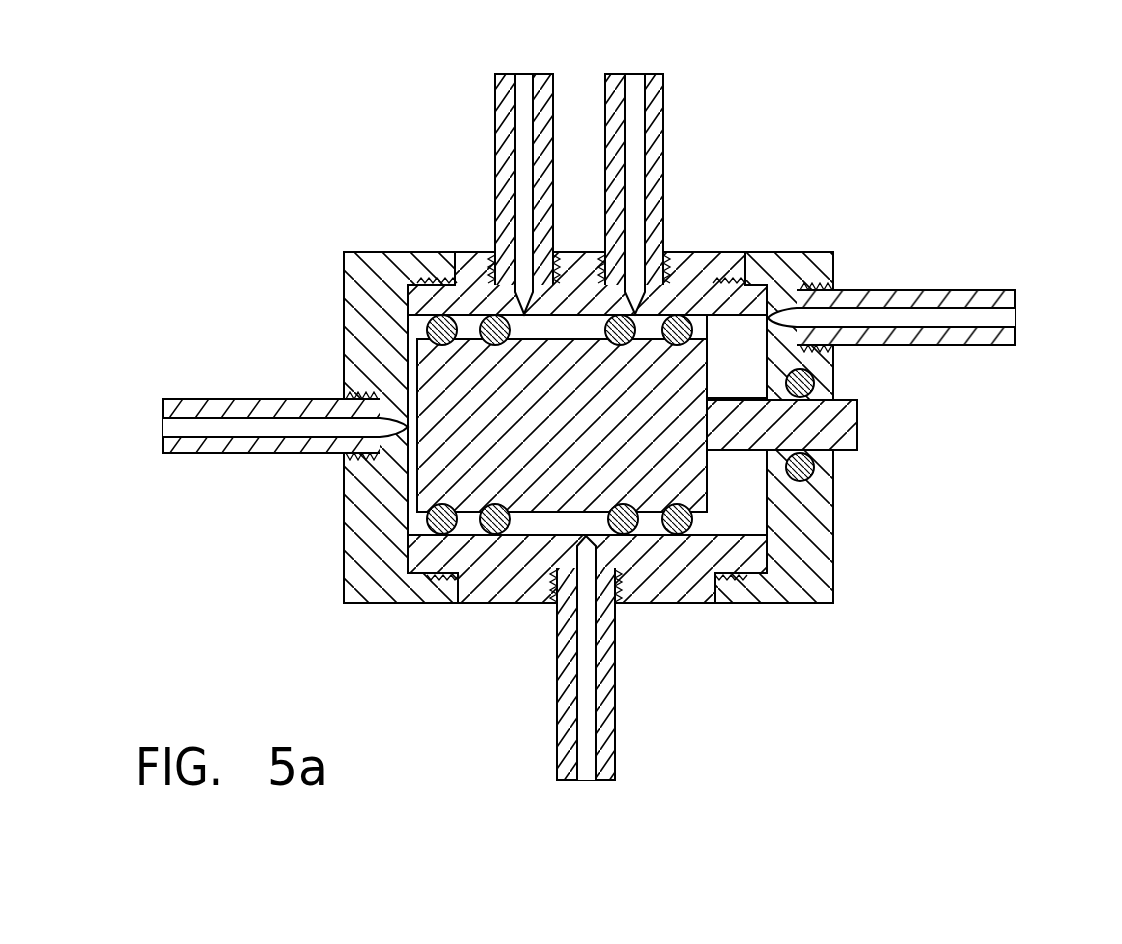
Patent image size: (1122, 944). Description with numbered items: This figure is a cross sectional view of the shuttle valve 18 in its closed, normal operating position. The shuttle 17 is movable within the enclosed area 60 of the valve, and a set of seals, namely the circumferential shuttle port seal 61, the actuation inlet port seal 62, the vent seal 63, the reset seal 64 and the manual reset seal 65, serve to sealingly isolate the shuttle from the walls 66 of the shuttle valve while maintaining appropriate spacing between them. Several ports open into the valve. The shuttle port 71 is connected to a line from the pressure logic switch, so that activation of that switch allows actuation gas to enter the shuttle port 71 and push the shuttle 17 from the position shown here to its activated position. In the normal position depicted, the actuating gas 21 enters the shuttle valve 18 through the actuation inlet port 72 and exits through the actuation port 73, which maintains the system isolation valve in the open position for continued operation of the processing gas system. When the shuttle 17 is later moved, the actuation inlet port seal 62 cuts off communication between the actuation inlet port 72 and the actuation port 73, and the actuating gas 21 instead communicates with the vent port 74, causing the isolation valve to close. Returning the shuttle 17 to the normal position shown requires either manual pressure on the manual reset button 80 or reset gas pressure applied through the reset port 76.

The shuttle 17 is at (690, 495).
The shuttle valve 18 is at (703, 182).
The actuating gas 21 is at (522, 137).
The enclosed area 60 is at (748, 468).
The shuttle port seal 61 is at (407, 320).
The actuation inlet port seal 62 is at (494, 316).
The vent seal 63 is at (662, 318).
The reset seal 64 is at (713, 287).
The manual reset seal 65 is at (815, 378).
The walls 66 is at (724, 316).
The shuttle port 71 is at (163, 425).
The actuation inlet port 72 is at (525, 73).
The actuation port 73 is at (585, 782).
The vent port 74 is at (634, 73).
The reset port 76 is at (1014, 314).
The manual reset button 80 is at (848, 417).